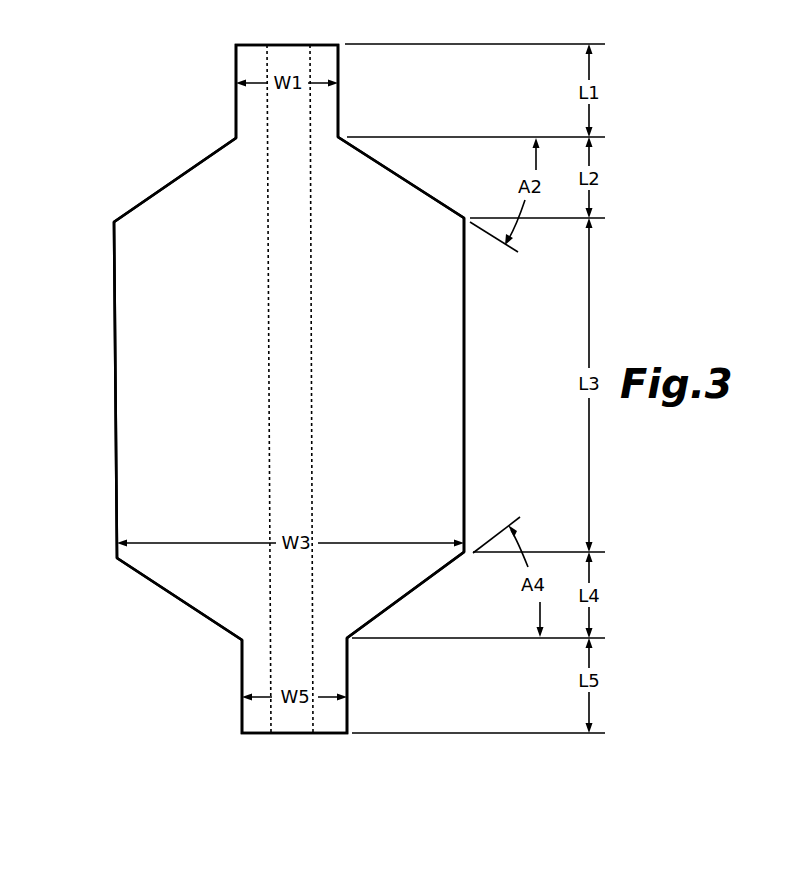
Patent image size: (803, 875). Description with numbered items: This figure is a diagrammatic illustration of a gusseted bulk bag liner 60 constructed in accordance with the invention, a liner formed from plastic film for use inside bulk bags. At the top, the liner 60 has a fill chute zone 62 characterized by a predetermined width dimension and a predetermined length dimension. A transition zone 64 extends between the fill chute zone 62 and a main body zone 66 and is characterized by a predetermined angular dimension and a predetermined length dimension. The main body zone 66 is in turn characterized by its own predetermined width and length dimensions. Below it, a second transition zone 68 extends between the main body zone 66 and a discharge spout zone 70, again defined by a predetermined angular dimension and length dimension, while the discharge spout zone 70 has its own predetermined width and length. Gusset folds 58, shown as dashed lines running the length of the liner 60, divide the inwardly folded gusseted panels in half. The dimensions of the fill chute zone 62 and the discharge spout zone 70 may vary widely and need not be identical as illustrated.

The gusset folds 58 is at (269, 347).
The gusseted bulk bag liner 60 is at (163, 152).
The fill chute zone 62 is at (236, 92).
The transition zone 64 is at (145, 198).
The main body zone 66 is at (114, 340).
The second transition zone 68 is at (153, 588).
The discharge spout zone 70 is at (242, 708).